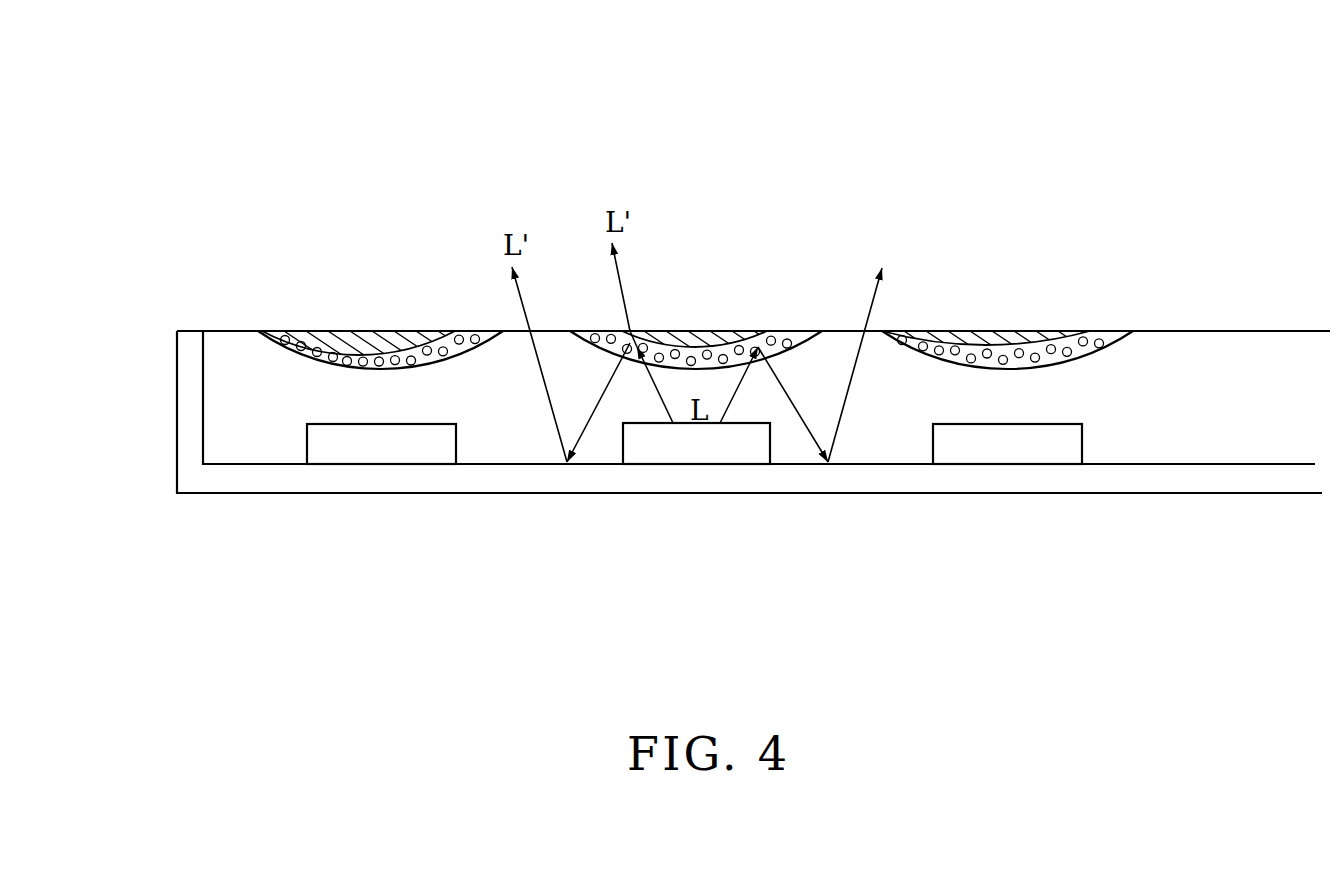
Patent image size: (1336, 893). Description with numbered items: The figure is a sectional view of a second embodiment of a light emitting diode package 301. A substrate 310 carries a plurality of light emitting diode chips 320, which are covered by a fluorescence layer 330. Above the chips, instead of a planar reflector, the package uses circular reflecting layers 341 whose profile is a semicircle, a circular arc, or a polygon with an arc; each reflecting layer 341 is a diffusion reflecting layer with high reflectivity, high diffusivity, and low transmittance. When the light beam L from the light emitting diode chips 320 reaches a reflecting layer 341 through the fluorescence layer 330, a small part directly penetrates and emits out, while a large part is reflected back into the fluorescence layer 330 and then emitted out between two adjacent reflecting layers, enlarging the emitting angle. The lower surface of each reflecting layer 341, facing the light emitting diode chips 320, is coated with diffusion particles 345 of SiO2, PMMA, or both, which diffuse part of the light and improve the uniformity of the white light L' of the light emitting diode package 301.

The light emitting diode package 301 is at (1177, 113).
The substrate 310 is at (267, 487).
The light emitting diode chips 320 is at (695, 450).
The fluorescence layer 330 is at (227, 417).
The reflecting layer 341 is at (730, 331).
The diffusion particles 345 is at (805, 331).